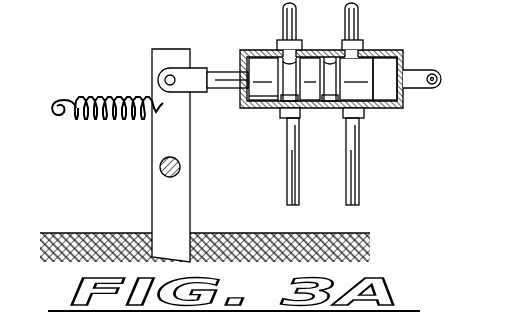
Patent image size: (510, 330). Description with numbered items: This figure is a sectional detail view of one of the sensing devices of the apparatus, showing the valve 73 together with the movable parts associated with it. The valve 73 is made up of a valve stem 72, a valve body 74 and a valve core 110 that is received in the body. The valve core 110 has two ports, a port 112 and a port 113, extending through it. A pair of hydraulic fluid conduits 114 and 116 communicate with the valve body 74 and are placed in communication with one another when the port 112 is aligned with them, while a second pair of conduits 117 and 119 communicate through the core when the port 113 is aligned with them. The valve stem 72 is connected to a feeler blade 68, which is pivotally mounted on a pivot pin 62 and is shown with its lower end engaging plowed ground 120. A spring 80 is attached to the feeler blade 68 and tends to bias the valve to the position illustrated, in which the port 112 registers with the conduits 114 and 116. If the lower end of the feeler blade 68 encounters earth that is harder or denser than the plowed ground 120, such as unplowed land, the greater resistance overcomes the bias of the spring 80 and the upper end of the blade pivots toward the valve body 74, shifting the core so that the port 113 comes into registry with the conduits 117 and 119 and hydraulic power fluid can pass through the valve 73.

The pivot pin 62 is at (160, 167).
The feeler blade 68 is at (178, 208).
The valve stem 72 is at (241, 75).
The valve 73 is at (413, 47).
The valve body 74 is at (378, 52).
The spring 80 is at (91, 125).
The valve core 110 is at (308, 72).
The port 112 is at (285, 115).
The port 113 is at (332, 108).
The hydraulic fluid conduit 114 is at (291, 15).
The hydraulic fluid conduit 116 is at (287, 175).
The conduit 117 is at (351, 186).
The conduit 119 is at (353, 15).
The plowed ground 120 is at (92, 234).